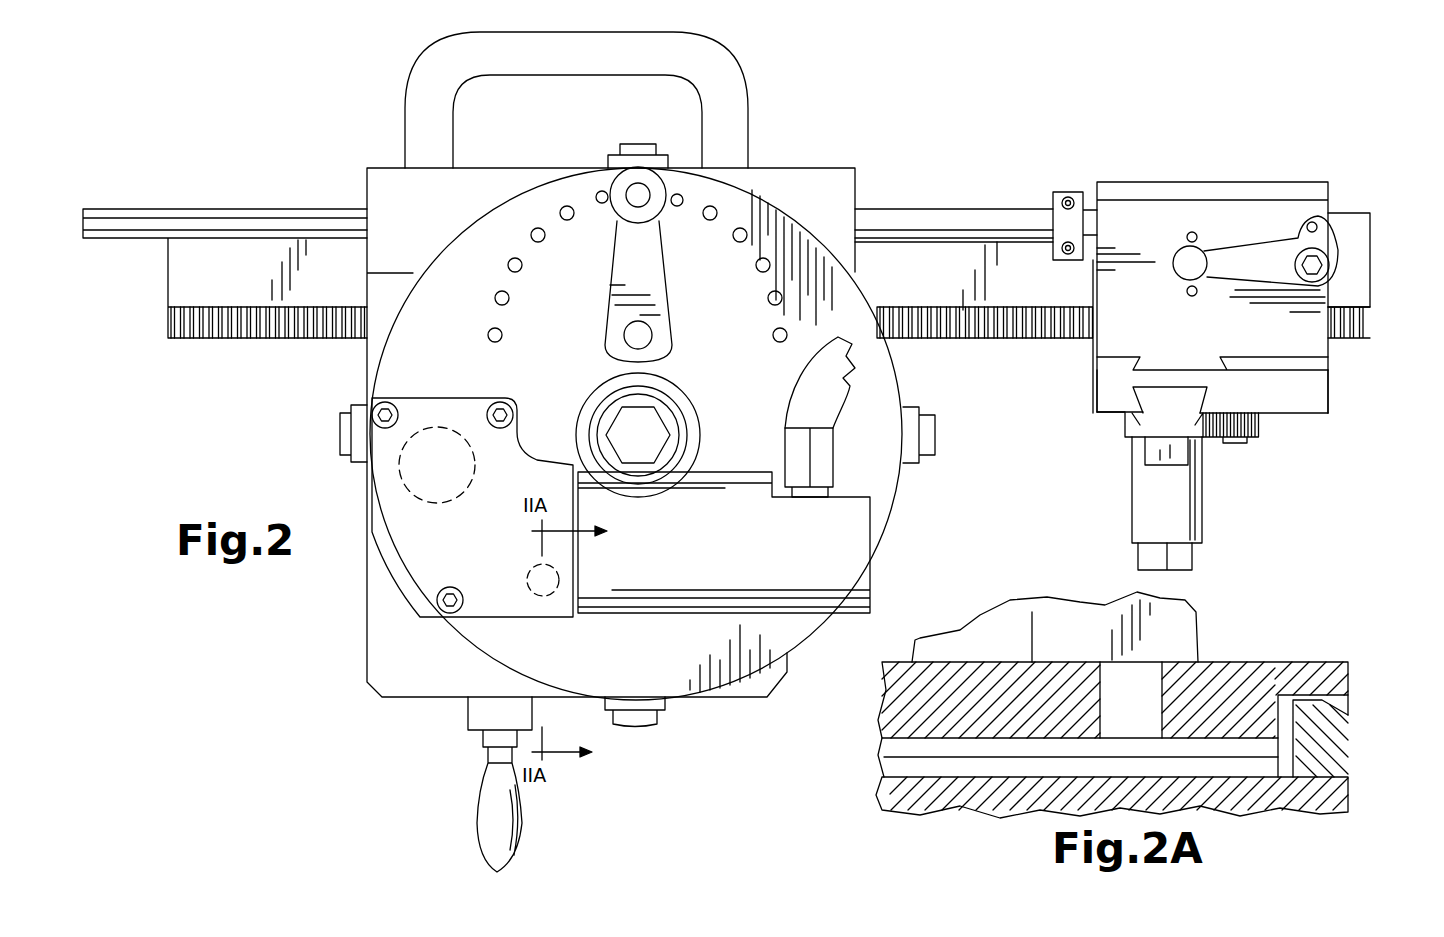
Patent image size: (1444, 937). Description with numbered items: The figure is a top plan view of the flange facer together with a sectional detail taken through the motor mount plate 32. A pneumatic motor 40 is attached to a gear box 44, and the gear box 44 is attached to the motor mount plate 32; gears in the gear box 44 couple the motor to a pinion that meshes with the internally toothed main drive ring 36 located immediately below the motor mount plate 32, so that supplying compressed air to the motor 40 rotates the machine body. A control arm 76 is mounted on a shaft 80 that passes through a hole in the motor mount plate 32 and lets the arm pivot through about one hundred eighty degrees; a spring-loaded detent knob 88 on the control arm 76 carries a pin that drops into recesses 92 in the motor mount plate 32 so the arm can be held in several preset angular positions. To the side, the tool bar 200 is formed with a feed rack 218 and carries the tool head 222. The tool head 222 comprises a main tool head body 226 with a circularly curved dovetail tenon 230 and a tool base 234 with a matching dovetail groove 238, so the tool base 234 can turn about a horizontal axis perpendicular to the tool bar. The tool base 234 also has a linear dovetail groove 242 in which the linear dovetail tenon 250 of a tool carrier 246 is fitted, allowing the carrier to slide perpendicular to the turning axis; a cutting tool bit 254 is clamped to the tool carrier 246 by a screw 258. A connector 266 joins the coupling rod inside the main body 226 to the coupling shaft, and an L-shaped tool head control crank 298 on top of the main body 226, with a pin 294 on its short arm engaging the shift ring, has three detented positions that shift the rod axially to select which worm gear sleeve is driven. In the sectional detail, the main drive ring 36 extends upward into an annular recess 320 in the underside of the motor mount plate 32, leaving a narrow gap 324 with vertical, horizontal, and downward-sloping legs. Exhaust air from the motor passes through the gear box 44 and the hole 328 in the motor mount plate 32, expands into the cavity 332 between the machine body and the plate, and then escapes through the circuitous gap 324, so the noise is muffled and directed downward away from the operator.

In FIG. 2, the motor mount plate 32 is at (887, 498).
In FIG. 2A, the motor mount plate 32 is at (1350, 680).
In FIG. 2A, the main drive ring 36 is at (1350, 755).
In FIG. 2, the pneumatic motor 40 is at (665, 575).
In FIG. 2, the gear box 44 is at (515, 605).
In FIG. 2A, the gear box 44 is at (1198, 633).
In FIG. 2, the control arm 76 is at (652, 287).
In FIG. 2, the shaft 80 is at (652, 338).
In FIG. 2, the spring-loaded detent knob 88 is at (637, 227).
In FIG. 2, the recesses 92 is at (502, 337).
In FIG. 2, the tool bar 200 is at (180, 270).
In FIG. 2, the feed rack 218 is at (243, 338).
In FIG. 2, the tool head 222 is at (1075, 383).
In FIG. 2, the main tool head body 226 is at (1115, 283).
In FIG. 2, the circularly curved dovetail tenon 230 is at (1160, 365).
In FIG. 2, the tool base 234 is at (1320, 390).
In FIG. 2, the dovetail groove 238 is at (1195, 365).
In FIG. 2, the linear dovetail groove 242 is at (1138, 418).
In FIG. 2, the tool carrier 246 is at (1205, 440).
In FIG. 2, the linear dovetail tenon 250 is at (1195, 407).
In FIG. 2, the cutting tool bit 254 is at (1157, 467).
In FIG. 2, the screw 258 is at (1195, 558).
In FIG. 2, the connector 266 is at (1070, 194).
In FIG. 2, the pin 294 is at (1313, 222).
In FIG. 2, the L-shaped tool head control crank 298 is at (1237, 258).
In FIG. 2A, the annular recess 320 is at (1278, 752).
In FIG. 2A, the gap 324 is at (1312, 702).
In FIG. 2, the hole 328 is at (527, 583).
In FIG. 2A, the hole 328 is at (1138, 730).
In FIG. 2A, the cavity 332 is at (930, 758).